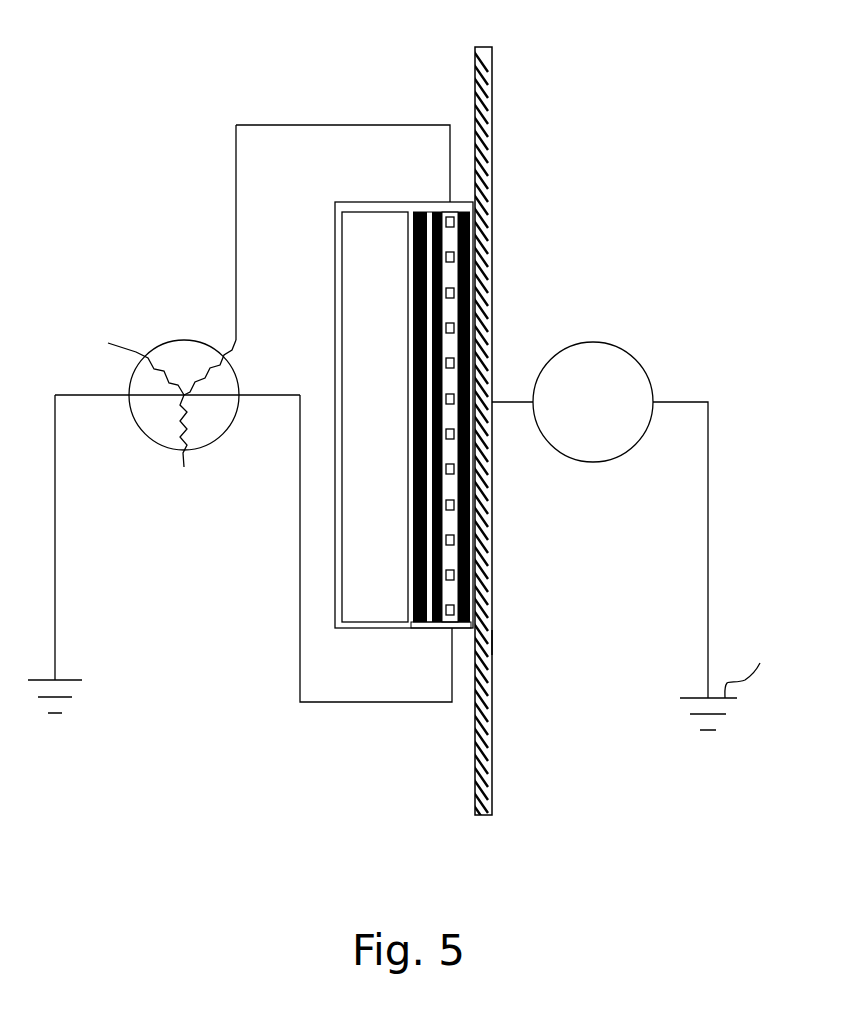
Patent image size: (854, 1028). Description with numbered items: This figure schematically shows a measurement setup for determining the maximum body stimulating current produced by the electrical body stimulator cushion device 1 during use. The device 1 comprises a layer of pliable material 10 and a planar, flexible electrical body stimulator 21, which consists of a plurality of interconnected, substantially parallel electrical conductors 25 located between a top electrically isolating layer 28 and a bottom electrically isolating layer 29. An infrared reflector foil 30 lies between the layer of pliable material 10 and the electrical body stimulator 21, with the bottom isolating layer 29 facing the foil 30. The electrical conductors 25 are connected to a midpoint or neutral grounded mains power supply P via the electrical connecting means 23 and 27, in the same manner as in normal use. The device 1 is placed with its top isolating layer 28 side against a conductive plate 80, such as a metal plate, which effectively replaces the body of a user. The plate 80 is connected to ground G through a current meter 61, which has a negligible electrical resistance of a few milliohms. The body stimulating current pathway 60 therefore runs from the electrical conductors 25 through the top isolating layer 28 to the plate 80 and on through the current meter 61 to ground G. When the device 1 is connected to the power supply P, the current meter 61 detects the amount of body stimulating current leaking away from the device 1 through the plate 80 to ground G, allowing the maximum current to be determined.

The electrical body stimulator cushion device 1 is at (442, 414).
The layer of pliable material 10 is at (390, 368).
The electrical body stimulator 21 is at (455, 278).
The electrical connecting means 23 is at (452, 210).
The electrical conductors 25 is at (455, 473).
The electrical connecting means 27 is at (452, 633).
The top electrically isolating layer 28 is at (492, 642).
The bottom electrically isolating layer 29 is at (437, 210).
The infrared reflector foil 30 is at (423, 623).
The body stimulating current pathway 60 is at (685, 402).
The current meter 61 is at (605, 370).
The conductive plate 80 is at (492, 173).
The mains power supply P is at (163, 340).
The ground G is at (77, 680).